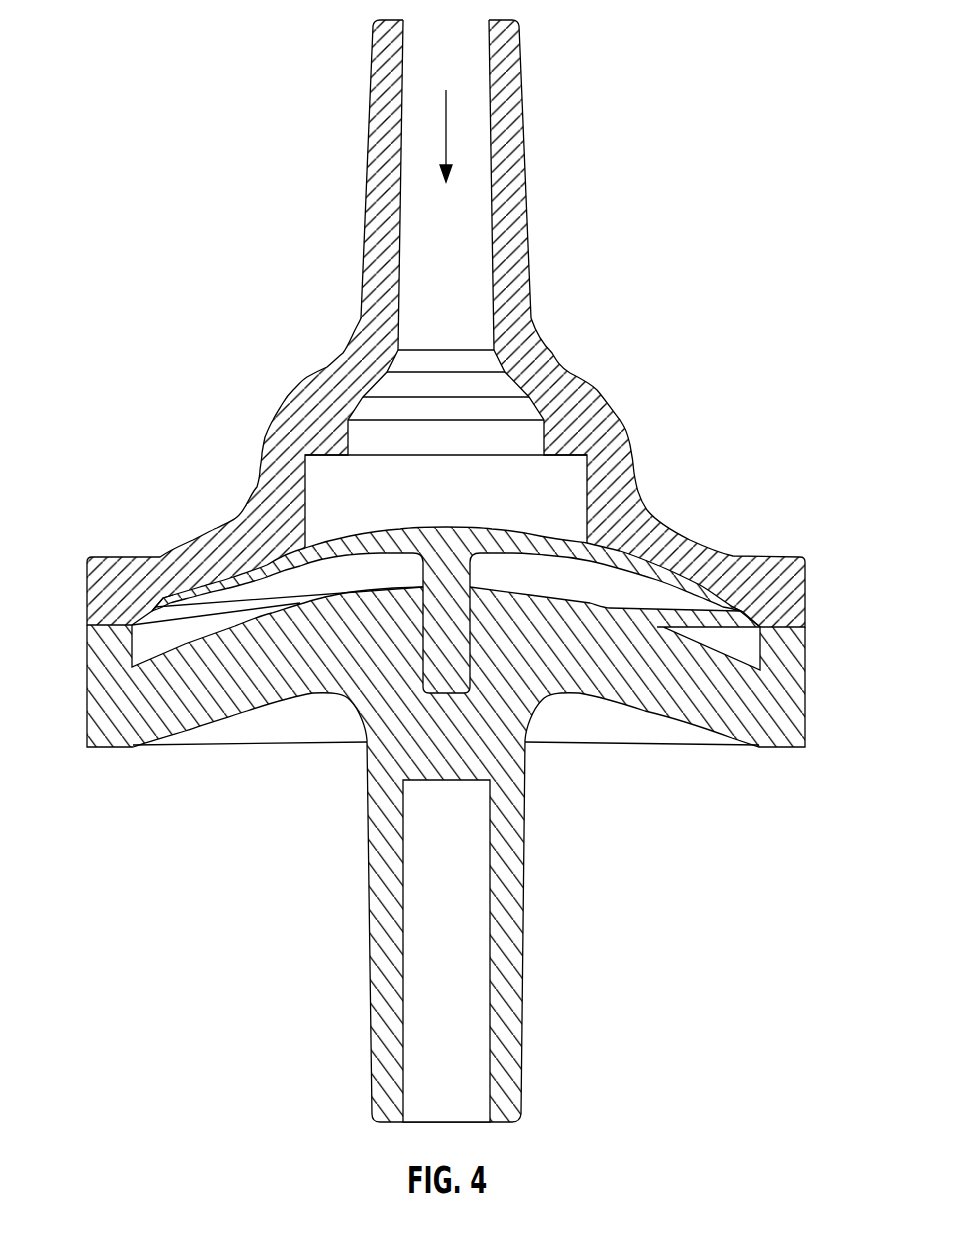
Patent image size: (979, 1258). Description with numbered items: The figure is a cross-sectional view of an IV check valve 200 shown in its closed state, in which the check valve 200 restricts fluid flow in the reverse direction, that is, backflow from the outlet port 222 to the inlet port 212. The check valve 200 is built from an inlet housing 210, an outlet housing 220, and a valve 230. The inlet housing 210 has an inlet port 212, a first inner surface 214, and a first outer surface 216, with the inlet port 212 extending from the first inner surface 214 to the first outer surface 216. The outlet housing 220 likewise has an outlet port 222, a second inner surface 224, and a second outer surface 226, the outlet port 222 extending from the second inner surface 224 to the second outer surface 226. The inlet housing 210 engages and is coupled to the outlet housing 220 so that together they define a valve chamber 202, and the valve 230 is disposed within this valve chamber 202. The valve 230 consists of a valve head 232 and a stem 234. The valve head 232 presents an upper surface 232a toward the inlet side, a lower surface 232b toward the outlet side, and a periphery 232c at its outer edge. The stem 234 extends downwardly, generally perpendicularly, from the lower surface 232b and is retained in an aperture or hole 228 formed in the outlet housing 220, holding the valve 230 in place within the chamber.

The IV check valve 200 is at (460, 571).
The inlet housing 210 is at (482, 220).
The inlet port 212 is at (468, 170).
The first inner surface 214 is at (163, 595).
The first outer surface 216 is at (290, 400).
The outlet housing 220 is at (405, 931).
The outlet port 222 is at (437, 1055).
The second inner surface 224 is at (460, 789).
The second outer surface 226 is at (133, 746).
The aperture or hole 228 is at (470, 621).
The valve 230 is at (447, 596).
The valve head 232 is at (650, 585).
The upper surface 232a is at (690, 568).
The lower surface 232b is at (650, 590).
The periphery 232c is at (762, 645).
The stem 234 is at (450, 653).
The valve chamber 202 is at (152, 633).